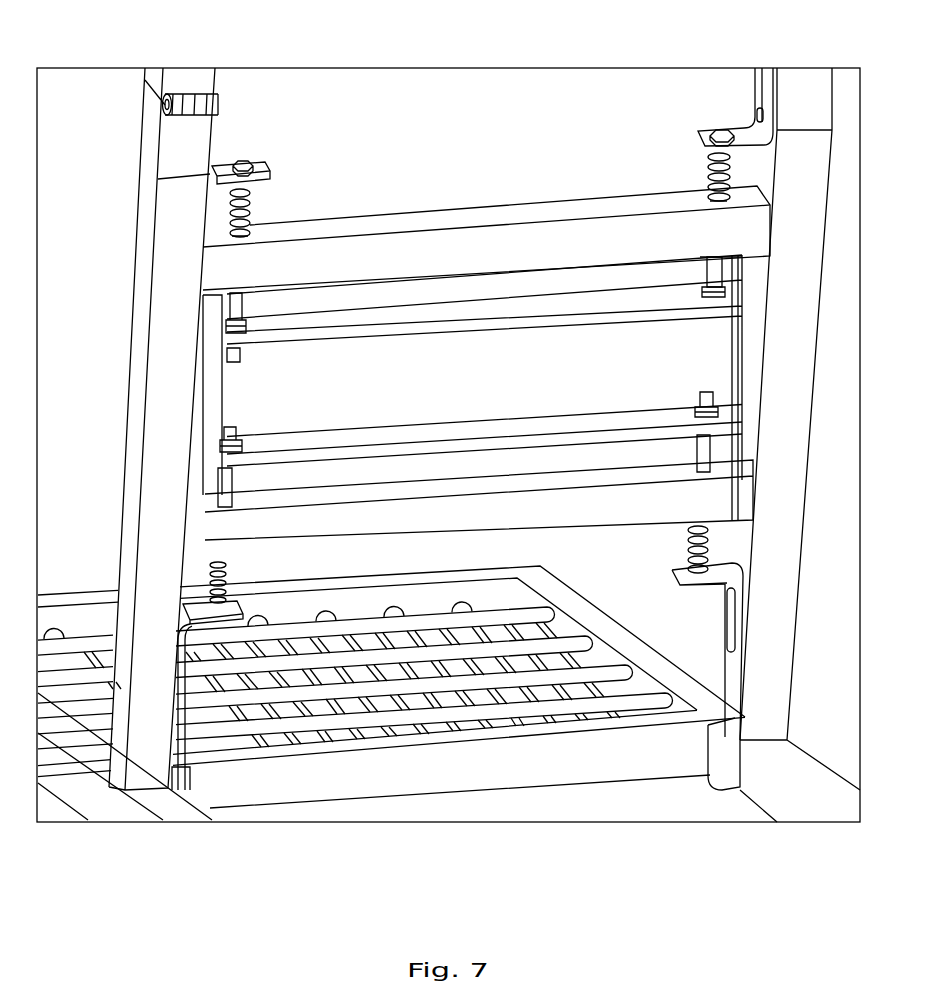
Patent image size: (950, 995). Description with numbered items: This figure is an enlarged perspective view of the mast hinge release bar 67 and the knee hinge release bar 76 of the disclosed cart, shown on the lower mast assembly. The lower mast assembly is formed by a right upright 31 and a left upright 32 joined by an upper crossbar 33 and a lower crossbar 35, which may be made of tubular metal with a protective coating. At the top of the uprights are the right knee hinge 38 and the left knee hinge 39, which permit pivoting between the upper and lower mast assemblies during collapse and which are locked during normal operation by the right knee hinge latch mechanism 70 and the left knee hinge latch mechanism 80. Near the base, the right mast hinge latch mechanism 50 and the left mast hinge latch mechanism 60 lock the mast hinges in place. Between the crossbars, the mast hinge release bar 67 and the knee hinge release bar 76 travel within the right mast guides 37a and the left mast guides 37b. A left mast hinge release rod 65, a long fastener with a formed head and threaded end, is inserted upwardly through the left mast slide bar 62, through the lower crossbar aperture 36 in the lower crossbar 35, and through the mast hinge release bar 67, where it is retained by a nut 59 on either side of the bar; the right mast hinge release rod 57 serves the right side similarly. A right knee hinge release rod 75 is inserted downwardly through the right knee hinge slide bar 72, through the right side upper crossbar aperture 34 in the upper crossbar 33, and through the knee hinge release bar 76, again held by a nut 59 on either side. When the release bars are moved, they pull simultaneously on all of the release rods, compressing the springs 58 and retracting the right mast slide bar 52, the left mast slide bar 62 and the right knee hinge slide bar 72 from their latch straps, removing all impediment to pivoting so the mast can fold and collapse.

The right upright 31 is at (810, 178).
The left upright 32 is at (147, 315).
The upper crossbar 33 is at (213, 262).
The right side upper crossbar aperture 34 is at (232, 235).
The lower crossbar 35 is at (548, 520).
The lower crossbar aperture 36 is at (692, 463).
The right mast guides 37a is at (750, 358).
The left mast guides 37b is at (205, 408).
The right knee hinge 38 is at (818, 98).
The left knee hinge 39 is at (175, 150).
The right mast hinge latch mechanism 50 is at (742, 659).
The right mast slide bar 52 is at (683, 583).
The right mast hinge release rod 57 is at (728, 445).
The springs 58 is at (250, 212).
The nut 59 is at (728, 296).
The left mast hinge latch mechanism 60 is at (180, 614).
The left mast slide bar 62 is at (196, 613).
The left mast hinge release rod 65 is at (218, 478).
The mast hinge release bar 67 is at (428, 436).
The right knee hinge latch mechanism 70 is at (764, 75).
The right knee hinge slide bar 72 is at (776, 96).
The right knee hinge release rod 75 is at (713, 268).
The knee hinge release bar 76 is at (558, 303).
The left knee hinge latch mechanism 80 is at (262, 164).